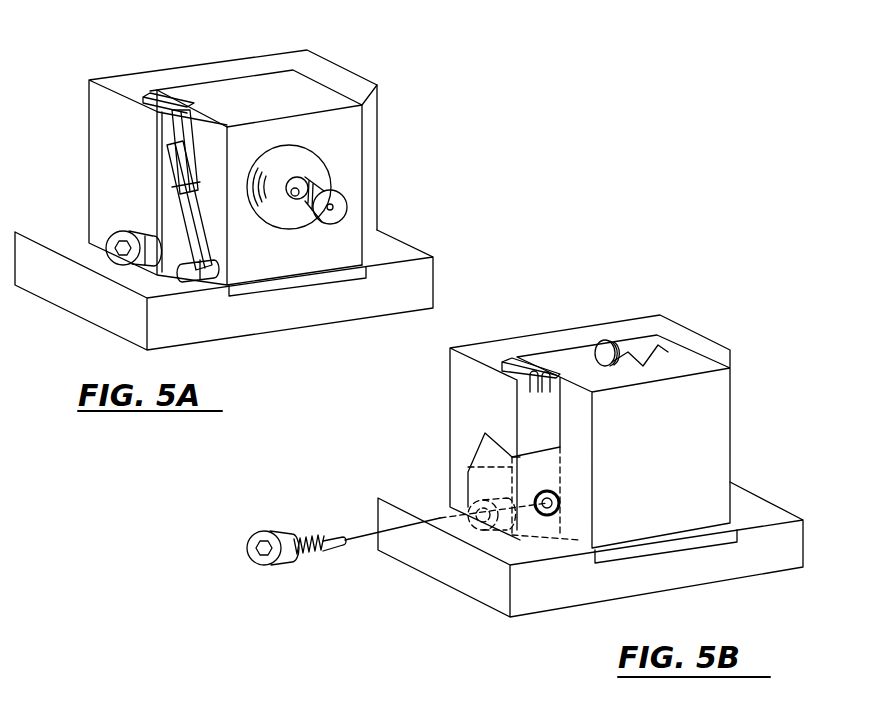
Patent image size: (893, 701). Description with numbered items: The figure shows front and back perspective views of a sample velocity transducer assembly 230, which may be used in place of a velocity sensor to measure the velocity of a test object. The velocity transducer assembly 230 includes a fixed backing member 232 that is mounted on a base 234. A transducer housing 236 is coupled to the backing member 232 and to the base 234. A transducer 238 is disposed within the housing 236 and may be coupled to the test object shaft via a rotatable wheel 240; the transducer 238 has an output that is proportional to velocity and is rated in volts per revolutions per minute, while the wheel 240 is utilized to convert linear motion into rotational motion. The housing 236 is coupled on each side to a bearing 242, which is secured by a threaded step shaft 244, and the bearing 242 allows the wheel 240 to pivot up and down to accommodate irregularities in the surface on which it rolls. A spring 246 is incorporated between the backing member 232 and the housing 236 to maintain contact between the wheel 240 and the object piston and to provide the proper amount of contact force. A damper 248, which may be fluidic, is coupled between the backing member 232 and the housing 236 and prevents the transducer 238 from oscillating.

In FIG. 5A, the velocity transducer assembly 230 is at (289, 153).
In FIG. 5B, the velocity transducer assembly 230 is at (611, 415).
In FIG. 5A, the fixed backing member 232 is at (377, 95).
In FIG. 5A, the base 234 is at (397, 237).
In FIG. 5A, the transducer housing 236 is at (378, 129).
In FIG. 5A, the transducer 238 is at (327, 166).
In FIG. 5A, the rotatable wheel 240 is at (346, 200).
In FIG. 5B, the bearing 242 is at (552, 491).
In FIG. 5A, the threaded step shaft 244 is at (117, 228).
In FIG. 5B, the threaded step shaft 244 is at (273, 528).
In FIG. 5B, the spring 246 is at (599, 345).
In FIG. 5A, the damper 248 is at (203, 183).